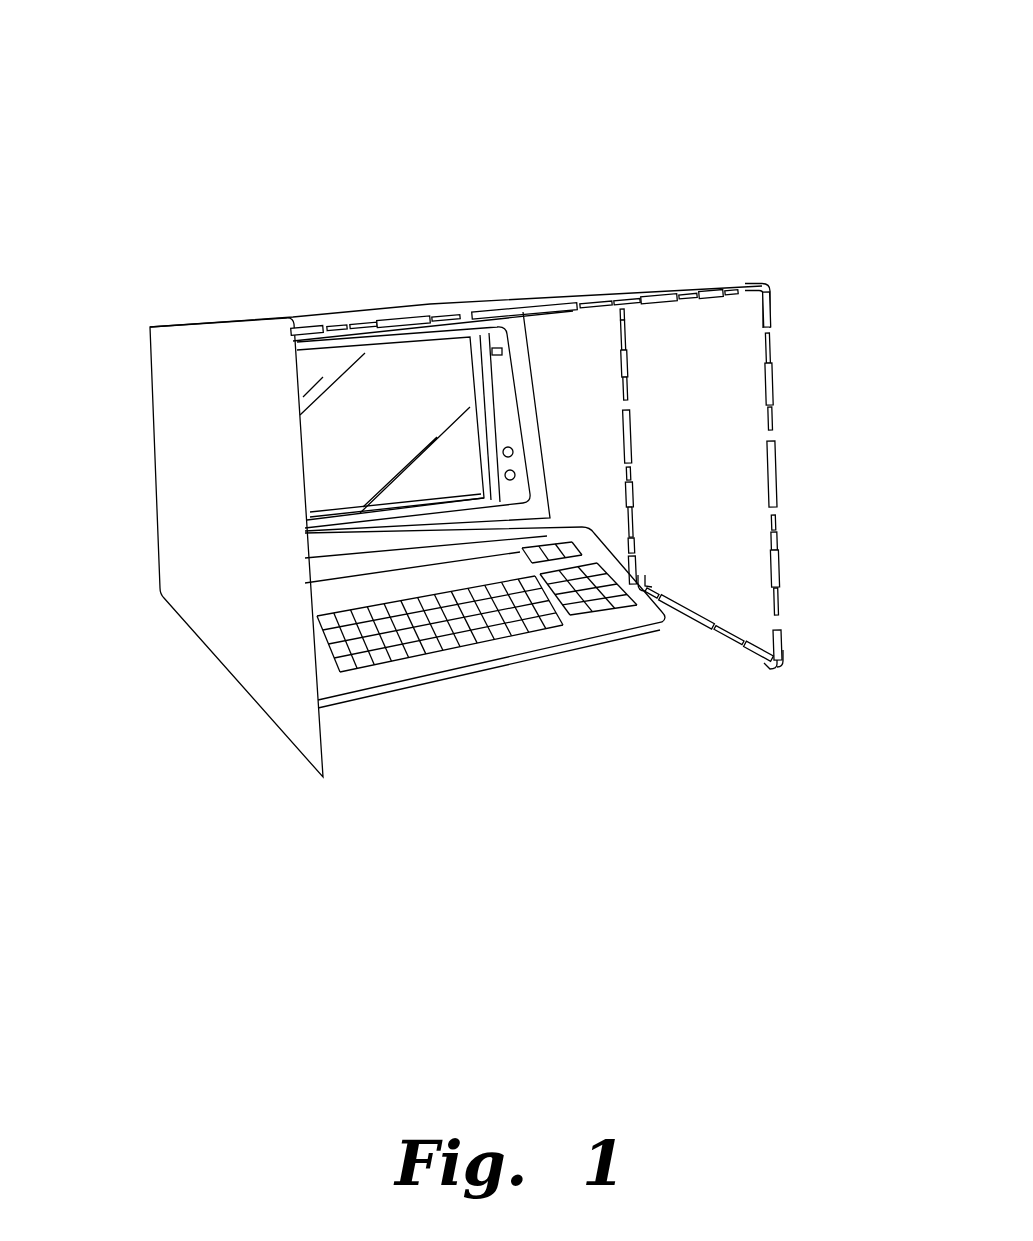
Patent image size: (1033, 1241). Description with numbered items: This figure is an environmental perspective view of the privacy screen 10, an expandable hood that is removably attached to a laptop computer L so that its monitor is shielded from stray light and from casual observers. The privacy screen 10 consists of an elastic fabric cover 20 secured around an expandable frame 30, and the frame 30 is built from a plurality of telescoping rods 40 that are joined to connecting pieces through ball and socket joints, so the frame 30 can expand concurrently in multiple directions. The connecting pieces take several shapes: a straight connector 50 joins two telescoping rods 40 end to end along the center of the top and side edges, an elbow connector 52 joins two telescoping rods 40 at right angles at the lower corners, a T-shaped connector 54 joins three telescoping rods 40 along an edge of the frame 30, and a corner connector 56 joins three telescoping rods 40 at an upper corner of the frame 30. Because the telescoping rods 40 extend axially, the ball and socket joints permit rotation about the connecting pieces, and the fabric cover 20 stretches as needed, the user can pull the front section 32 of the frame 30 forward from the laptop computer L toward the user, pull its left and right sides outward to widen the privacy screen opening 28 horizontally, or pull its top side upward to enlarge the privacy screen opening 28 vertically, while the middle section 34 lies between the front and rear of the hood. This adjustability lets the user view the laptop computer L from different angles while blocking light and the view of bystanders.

The privacy screen 10 is at (385, 105).
The elastic fabric cover 20 is at (440, 320).
The privacy screen opening 28 is at (565, 725).
The expandable frame 30 is at (641, 431).
The front section 32 is at (291, 505).
The middle section 34 is at (613, 500).
The telescoping rods 40 is at (396, 318).
The straight connector 50 is at (515, 322).
The elbow connector 52 is at (785, 640).
The T-shaped connector 54 is at (638, 558).
The corner connector 56 is at (293, 330).
The laptop computer L is at (472, 667).